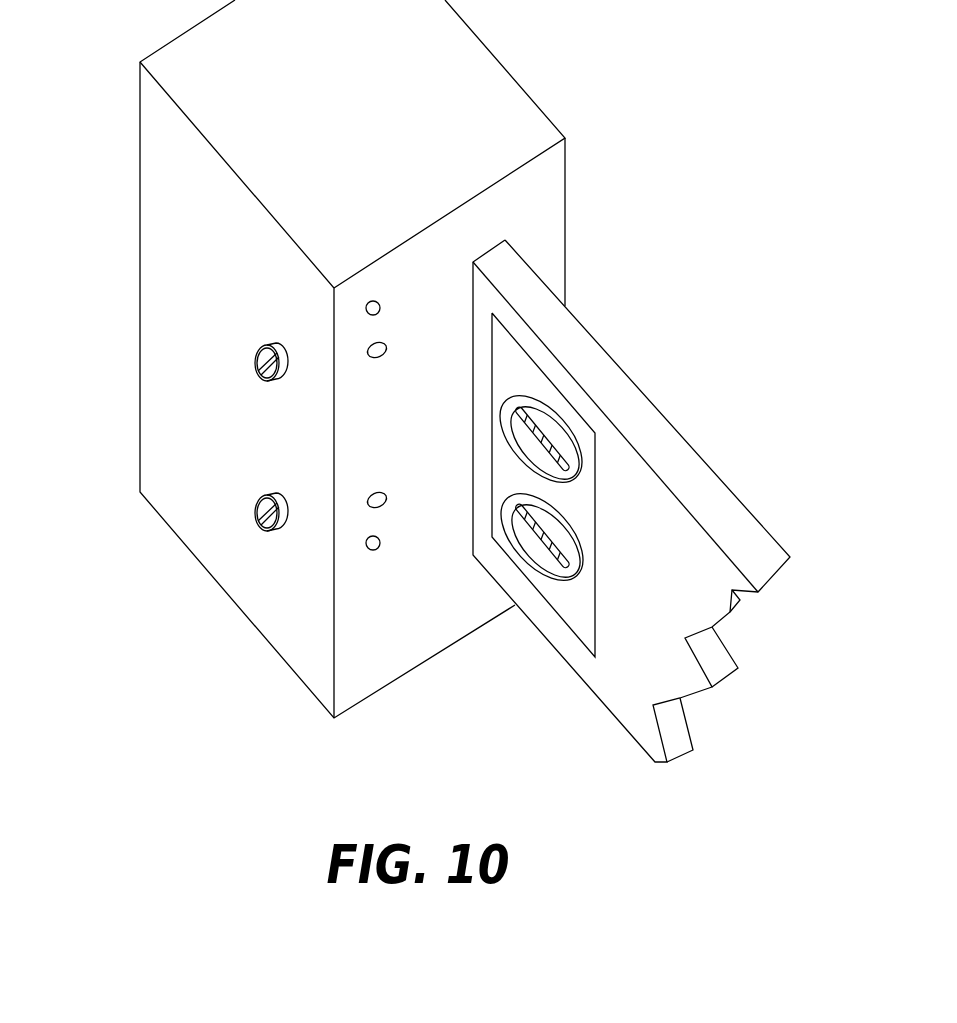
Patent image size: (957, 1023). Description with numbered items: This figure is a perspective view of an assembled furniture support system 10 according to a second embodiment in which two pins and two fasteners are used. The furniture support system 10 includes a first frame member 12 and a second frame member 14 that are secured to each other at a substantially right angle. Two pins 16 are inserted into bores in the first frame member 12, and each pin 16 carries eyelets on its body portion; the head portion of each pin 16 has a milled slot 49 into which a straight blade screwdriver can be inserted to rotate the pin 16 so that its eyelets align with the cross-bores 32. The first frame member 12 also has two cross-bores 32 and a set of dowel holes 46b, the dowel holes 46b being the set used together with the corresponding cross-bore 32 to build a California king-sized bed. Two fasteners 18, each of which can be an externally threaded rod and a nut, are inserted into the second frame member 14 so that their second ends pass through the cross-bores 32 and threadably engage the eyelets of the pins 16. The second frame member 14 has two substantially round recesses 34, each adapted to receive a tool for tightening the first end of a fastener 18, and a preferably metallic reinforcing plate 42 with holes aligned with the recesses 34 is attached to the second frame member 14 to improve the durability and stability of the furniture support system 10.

The furniture support system 10 is at (694, 165).
The first frame member 12 is at (140, 446).
The second frame member 14 is at (720, 476).
The pin 16 is at (253, 358).
The fastener 18 is at (575, 455).
The cross-bore 32 is at (386, 344).
The recess 34 is at (557, 412).
The reinforcing plate 42 is at (597, 543).
The dowel holes 46b is at (372, 301).
The milled slot 49 is at (270, 382).